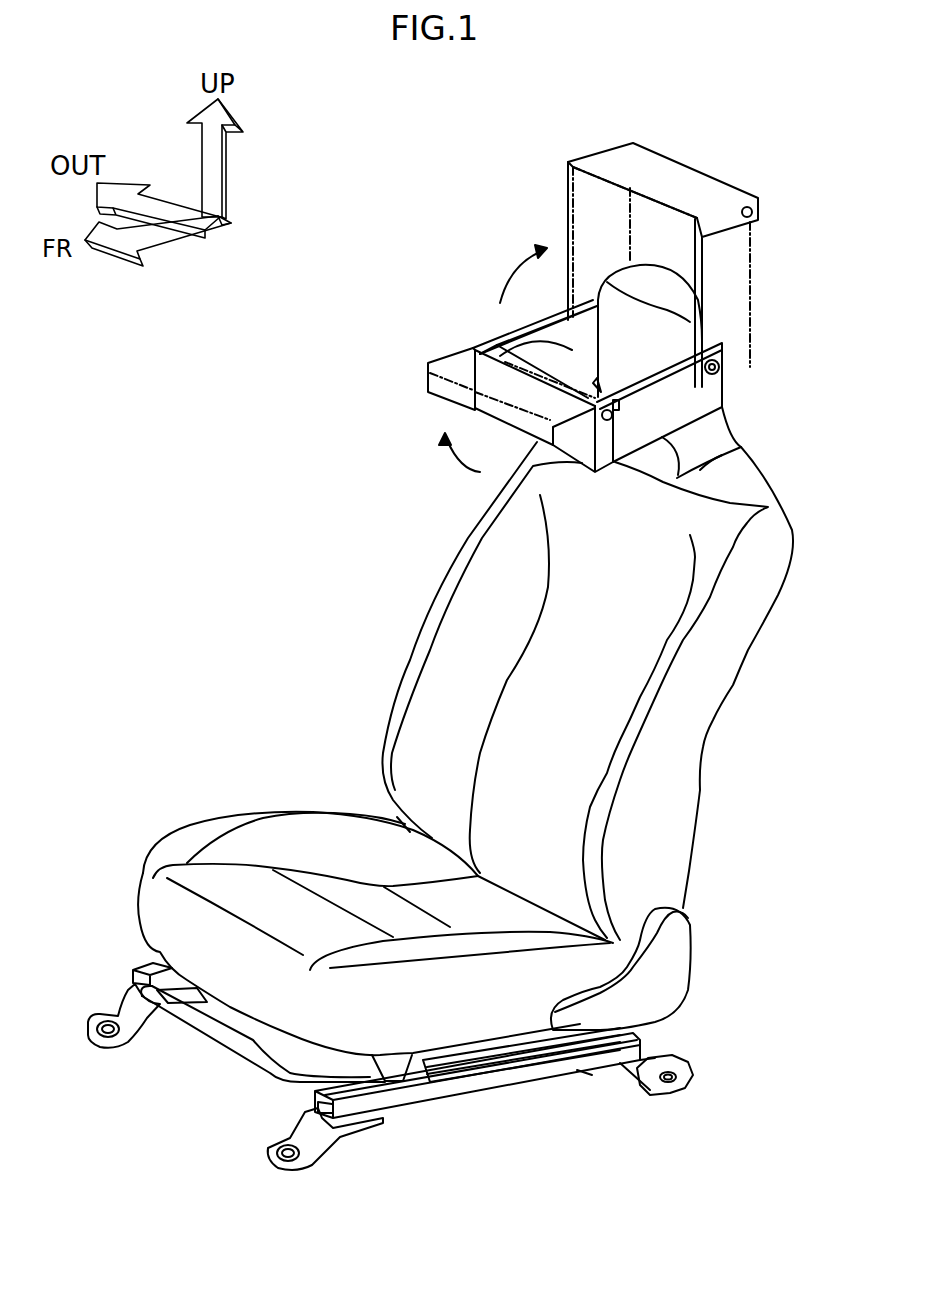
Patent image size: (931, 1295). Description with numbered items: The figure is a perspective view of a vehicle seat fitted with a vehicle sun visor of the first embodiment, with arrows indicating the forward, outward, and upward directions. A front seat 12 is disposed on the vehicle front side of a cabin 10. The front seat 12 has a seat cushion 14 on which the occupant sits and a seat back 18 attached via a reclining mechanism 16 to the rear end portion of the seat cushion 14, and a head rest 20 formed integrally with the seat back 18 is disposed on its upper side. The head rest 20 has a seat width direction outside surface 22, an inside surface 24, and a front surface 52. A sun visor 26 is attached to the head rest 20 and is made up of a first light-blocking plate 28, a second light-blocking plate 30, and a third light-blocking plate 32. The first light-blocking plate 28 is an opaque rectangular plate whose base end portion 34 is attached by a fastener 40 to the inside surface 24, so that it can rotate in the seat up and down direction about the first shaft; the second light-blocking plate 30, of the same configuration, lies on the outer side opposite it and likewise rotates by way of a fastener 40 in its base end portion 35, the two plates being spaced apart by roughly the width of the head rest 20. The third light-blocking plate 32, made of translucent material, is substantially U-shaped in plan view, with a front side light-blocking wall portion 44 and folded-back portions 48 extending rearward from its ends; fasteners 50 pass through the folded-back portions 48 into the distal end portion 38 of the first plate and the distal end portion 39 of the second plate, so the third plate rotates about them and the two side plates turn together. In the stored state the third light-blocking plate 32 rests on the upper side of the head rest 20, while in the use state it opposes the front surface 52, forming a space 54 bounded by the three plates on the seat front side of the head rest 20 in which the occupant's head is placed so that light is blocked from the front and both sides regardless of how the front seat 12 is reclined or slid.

The cabin 10 is at (200, 450).
The front seat 12 is at (340, 435).
The seat cushion 14 is at (178, 830).
The reclining mechanism 16 is at (676, 937).
The seat back 18 is at (720, 680).
The head rest 20 is at (713, 418).
The outside surface 22 is at (591, 313).
The inside surface 24 is at (660, 440).
The sun visor 26 is at (472, 335).
The first light-blocking plate 28 is at (742, 448).
The second light-blocking plate 30 is at (528, 326).
The third light-blocking plate 32 is at (583, 450).
The base end portion 34 is at (713, 393).
The base end portion 35 is at (583, 320).
The distal end portion 38 is at (600, 387).
The distal end portion 39 is at (498, 336).
The fastener 40 is at (723, 352).
The front side light-blocking wall portion 44 is at (508, 413).
The folded-back portion 48 is at (602, 450).
The fastener 50 is at (617, 413).
The front surface 52 is at (630, 307).
The space 54 is at (517, 368).